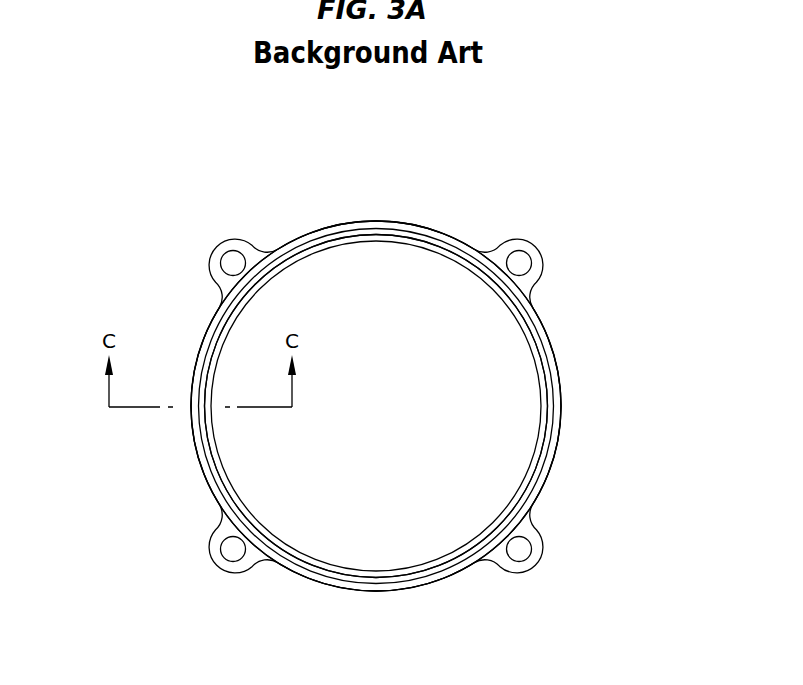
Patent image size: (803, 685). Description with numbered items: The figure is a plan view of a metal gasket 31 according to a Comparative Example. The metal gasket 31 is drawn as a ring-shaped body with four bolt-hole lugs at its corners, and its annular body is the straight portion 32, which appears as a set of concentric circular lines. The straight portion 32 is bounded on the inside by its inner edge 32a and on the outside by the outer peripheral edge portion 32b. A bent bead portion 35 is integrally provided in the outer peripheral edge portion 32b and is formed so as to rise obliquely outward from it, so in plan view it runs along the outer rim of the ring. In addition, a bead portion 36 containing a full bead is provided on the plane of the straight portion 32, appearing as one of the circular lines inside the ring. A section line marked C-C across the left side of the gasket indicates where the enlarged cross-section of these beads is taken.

The metal gasket 31 is at (449, 211).
The straight portion 32 is at (192, 432).
The inner peripheral edge of sealing portion 32a is at (538, 427).
The outer peripheral edge portion 32b is at (561, 427).
The bent bead portion 35 is at (200, 467).
The bead portion 36 is at (312, 567).